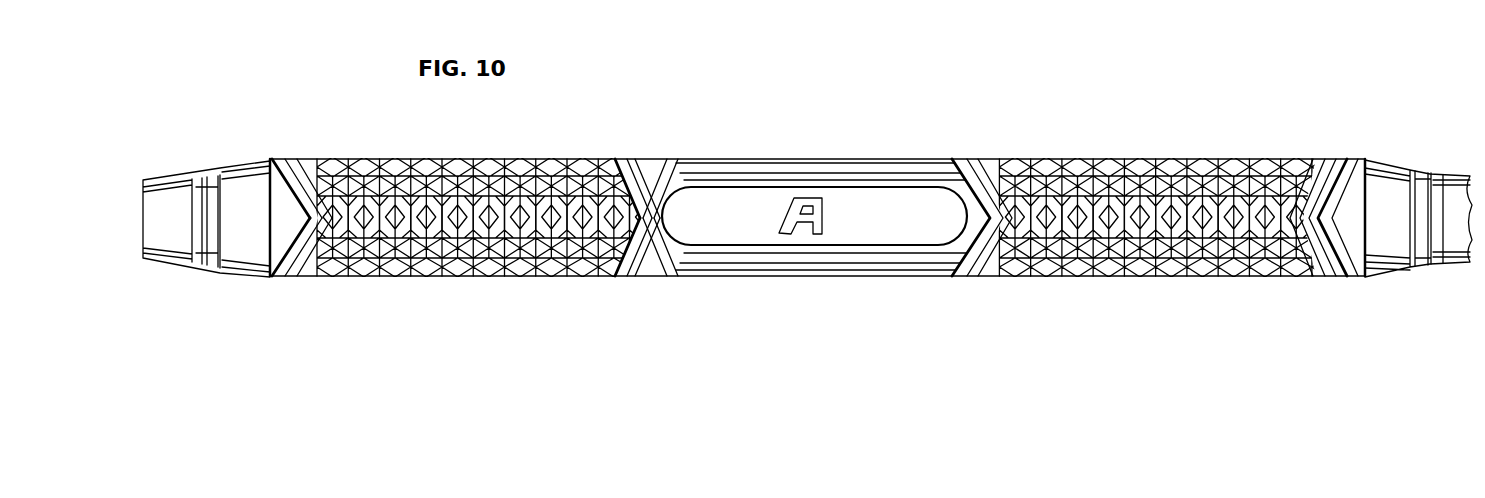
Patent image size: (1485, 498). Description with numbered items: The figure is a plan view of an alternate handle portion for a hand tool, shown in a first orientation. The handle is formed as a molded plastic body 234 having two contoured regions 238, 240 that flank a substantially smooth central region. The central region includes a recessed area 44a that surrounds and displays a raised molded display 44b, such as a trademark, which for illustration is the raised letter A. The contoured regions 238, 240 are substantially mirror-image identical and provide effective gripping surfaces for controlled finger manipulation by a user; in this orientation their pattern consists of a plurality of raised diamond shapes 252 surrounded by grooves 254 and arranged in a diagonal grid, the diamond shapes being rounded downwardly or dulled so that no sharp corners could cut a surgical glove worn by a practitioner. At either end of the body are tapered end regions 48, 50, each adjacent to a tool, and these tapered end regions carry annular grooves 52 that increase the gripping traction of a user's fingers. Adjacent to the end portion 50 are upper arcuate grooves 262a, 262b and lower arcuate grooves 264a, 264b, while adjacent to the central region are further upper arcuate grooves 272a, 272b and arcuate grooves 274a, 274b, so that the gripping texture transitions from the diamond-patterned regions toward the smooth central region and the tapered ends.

The tapered end region 50 is at (242, 160).
The upper arcuate groove 262a is at (278, 165).
The upper arcuate groove 262b is at (310, 160).
The lower arcuate groove 264a is at (278, 278).
The lower arcuate groove 264b is at (310, 280).
The raised diamond shape 252 is at (405, 188).
The groove 254 is at (473, 185).
The contoured region 240 is at (489, 175).
The upper arcuate groove 272a is at (640, 158).
The upper arcuate groove 272b is at (667, 158).
The arcuate groove 274a is at (642, 277).
The arcuate groove 274b is at (673, 278).
The molded plastic body 234 is at (824, 212).
The recessed area 44a is at (884, 200).
The raised molded display 44b is at (793, 221).
The contoured region 238 is at (1178, 150).
The tapered end region 48 is at (1404, 188).
The annular groove 52 is at (1435, 170).